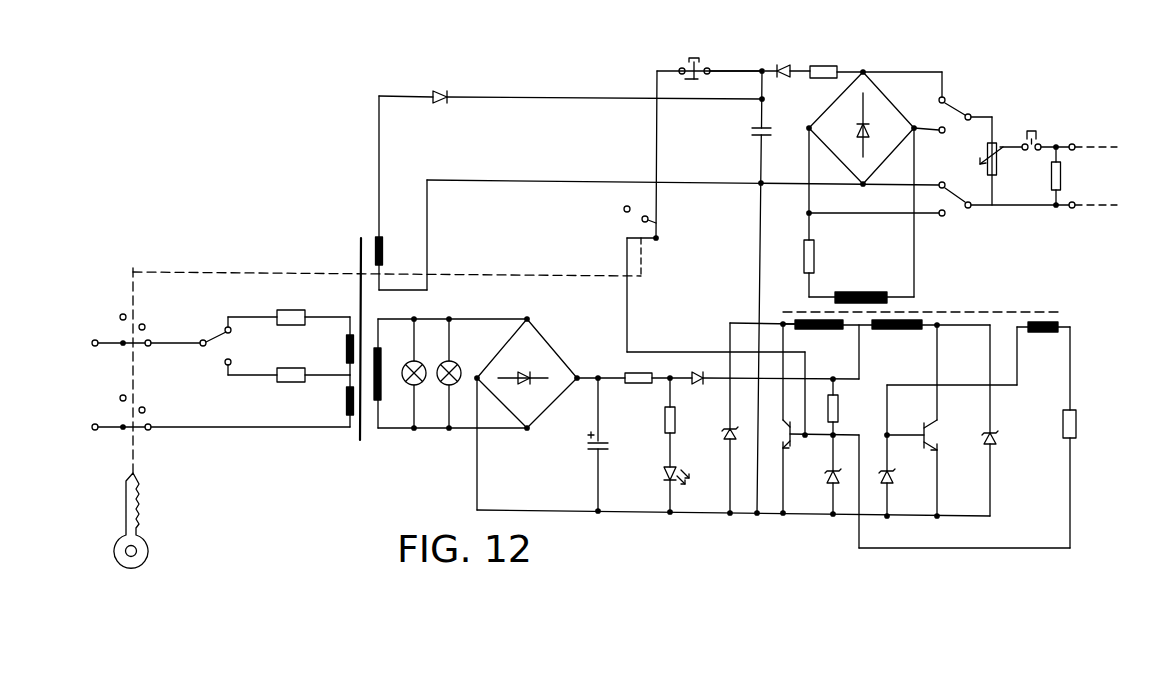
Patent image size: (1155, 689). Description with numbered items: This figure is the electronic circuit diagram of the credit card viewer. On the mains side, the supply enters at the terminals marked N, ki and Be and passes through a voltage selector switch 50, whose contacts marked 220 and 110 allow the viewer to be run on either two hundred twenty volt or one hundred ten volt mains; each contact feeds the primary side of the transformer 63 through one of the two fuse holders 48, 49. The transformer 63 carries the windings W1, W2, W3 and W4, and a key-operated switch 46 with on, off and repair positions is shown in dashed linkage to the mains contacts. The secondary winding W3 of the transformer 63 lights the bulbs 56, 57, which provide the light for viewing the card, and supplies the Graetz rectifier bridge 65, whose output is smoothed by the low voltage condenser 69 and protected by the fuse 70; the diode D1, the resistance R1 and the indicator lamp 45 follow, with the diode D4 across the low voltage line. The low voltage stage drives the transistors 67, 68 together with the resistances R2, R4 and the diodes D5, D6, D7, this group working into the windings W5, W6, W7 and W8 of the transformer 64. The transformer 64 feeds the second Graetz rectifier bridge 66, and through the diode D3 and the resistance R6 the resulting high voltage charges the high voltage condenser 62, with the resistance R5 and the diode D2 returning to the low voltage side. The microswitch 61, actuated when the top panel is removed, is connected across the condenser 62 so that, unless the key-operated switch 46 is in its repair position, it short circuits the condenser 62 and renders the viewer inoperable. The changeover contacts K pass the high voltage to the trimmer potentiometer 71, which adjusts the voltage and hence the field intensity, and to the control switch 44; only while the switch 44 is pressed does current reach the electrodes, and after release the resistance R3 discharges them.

The neutral mains terminal N is at (118, 347).
The mains contact ki is at (146, 361).
The mains input terminals Be is at (221, 385).
The voltage selector switch 50 is at (212, 321).
The 220 V switch contact 220 is at (251, 334).
The 110 V switch contact 110 is at (251, 363).
The fuse holder 48 is at (313, 306).
The fuse holder 49 is at (313, 360).
The winding of transformer 63 W1 is at (336, 346).
The winding of transformer 63 W2 is at (335, 401).
The winding of transformer 63 W3 is at (393, 373).
The winding of transformer 63 W4 is at (402, 193).
The key-operated switch 46 is at (138, 520).
The transformer 63 is at (357, 369).
The transformer 64 is at (948, 311).
The bulb 56 is at (418, 361).
The bulb 57 is at (456, 361).
The Graetz rectifier bridge 65 is at (527, 373).
The low voltage condenser 69 is at (586, 444).
The fuse 70 is at (658, 368).
The diode D1 is at (774, 394).
The diode D2 is at (570, 111).
The diode D3 is at (787, 55).
The diode D4 is at (746, 419).
The diode D5 is at (1002, 420).
The diode D6 is at (821, 475).
The diode D7 is at (898, 451).
The resistance R1 is at (659, 421).
The resistance R2 is at (846, 407).
The resistance R3 is at (1042, 176).
The resistance R4 is at (1082, 437).
The resistance R5 is at (871, 212).
The resistance R6 is at (836, 56).
The indicator lamp 45 is at (686, 484).
The transistor 67 is at (808, 418).
The transistor 68 is at (924, 421).
The winding of transformer 64 W5 is at (827, 341).
The winding of transformer 64 W6 is at (931, 341).
The winding of transformer 64 W7 is at (978, 353).
The winding of transformer 64 W8 is at (861, 285).
The microswitch 61 is at (720, 56).
The high voltage condenser 62 is at (714, 292).
The Graetz rectifier bridge 66 is at (876, 183).
The changeover switch K is at (918, 144).
The trimmer potentiometer 71 is at (1018, 161).
The control switch 44 is at (1045, 122).